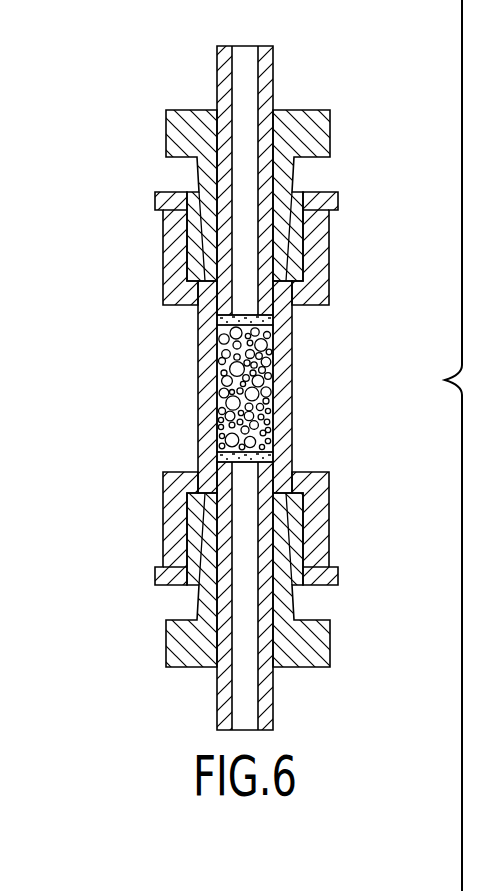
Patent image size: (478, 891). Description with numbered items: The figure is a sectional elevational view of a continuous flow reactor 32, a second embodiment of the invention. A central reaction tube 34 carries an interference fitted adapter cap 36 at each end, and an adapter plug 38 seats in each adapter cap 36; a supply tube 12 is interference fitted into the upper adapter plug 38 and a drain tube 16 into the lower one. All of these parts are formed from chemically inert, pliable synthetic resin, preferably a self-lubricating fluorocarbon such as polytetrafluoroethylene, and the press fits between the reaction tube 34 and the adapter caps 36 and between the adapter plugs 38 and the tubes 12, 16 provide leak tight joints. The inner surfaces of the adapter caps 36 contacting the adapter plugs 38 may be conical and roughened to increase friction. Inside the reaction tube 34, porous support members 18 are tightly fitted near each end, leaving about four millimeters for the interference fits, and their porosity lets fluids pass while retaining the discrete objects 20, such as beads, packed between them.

The supply tube 12 is at (272, 58).
The drain tube 16 is at (265, 708).
The porous support member 18 is at (228, 322).
The discrete objects 20 is at (237, 400).
The continuous flow reactor 32 is at (96, 379).
The reaction tube 34 is at (288, 412).
The adapter cap 36 is at (157, 200).
The adapter plug 38 is at (178, 117).